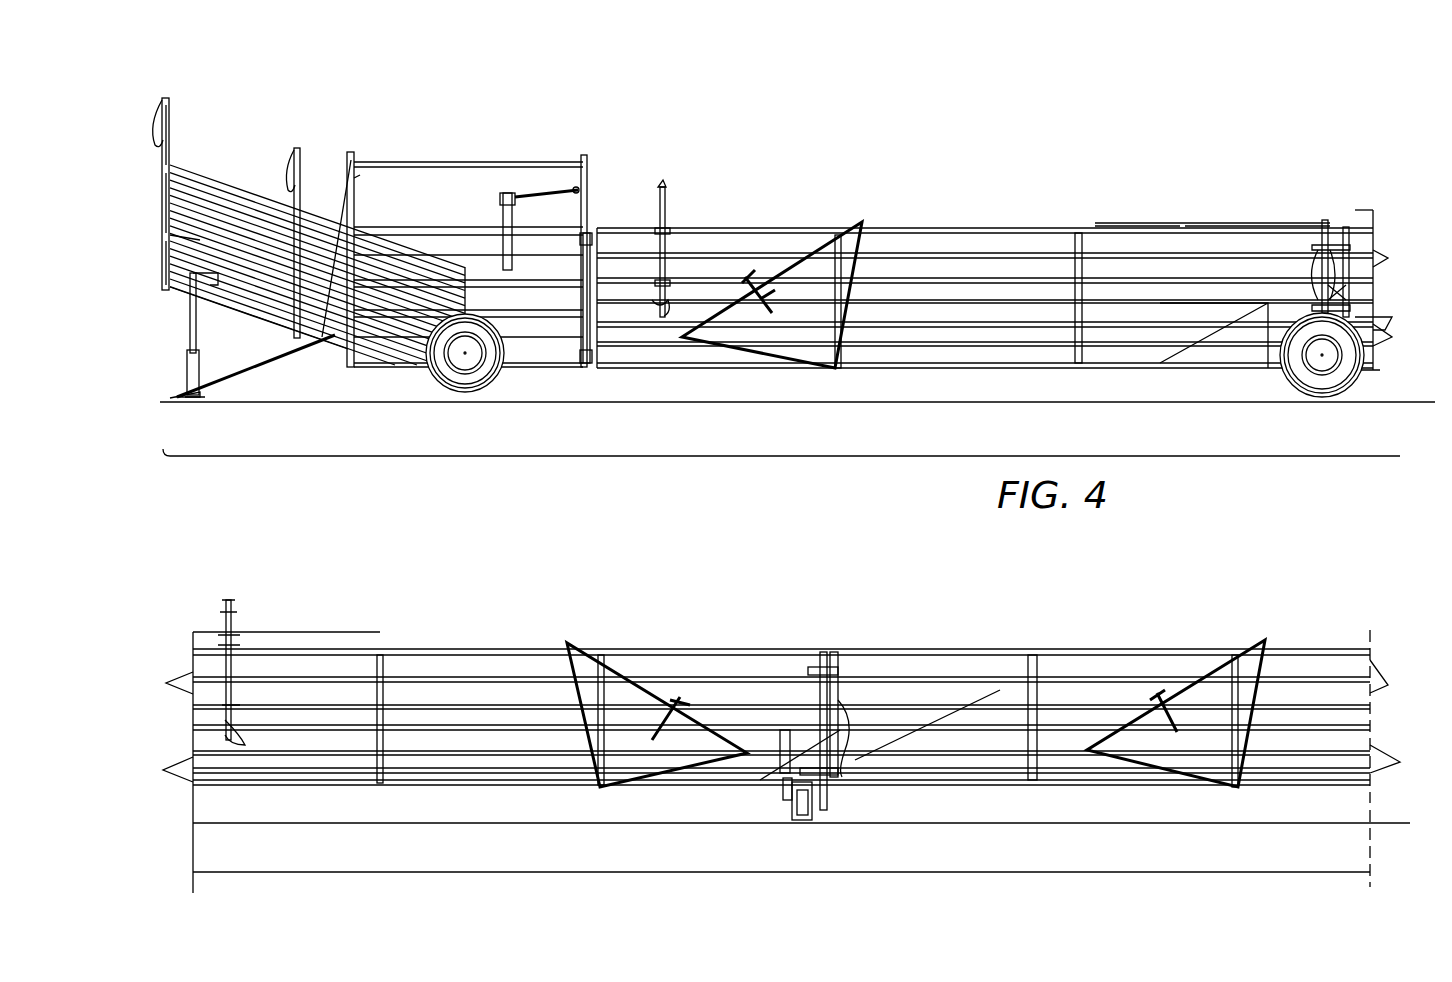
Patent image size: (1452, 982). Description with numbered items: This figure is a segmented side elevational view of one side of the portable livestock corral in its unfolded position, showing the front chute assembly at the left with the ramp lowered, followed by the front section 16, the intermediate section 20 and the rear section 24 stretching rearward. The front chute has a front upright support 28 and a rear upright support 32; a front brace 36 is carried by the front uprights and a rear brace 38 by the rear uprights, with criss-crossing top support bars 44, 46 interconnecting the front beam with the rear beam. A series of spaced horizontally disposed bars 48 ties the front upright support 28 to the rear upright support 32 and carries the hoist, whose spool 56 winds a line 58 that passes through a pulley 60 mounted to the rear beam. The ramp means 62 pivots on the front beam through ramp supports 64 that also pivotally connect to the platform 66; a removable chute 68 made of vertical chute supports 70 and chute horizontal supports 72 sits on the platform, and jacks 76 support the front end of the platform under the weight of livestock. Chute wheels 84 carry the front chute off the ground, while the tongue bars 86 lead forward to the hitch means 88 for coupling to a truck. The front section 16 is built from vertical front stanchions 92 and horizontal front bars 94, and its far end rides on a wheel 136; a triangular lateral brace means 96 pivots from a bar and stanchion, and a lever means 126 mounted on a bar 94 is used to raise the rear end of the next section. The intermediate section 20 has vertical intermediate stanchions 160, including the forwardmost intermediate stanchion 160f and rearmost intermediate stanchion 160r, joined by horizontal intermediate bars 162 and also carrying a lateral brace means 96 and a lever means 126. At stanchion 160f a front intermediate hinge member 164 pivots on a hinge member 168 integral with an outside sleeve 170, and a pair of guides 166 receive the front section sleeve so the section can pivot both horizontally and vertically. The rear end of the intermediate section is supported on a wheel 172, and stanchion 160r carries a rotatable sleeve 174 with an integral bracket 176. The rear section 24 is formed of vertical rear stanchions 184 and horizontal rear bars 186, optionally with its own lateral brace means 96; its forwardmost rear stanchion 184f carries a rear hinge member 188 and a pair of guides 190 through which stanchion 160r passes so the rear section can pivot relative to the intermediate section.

The front section 16 is at (992, 222).
The intermediate section 20 is at (740, 640).
The rear section 24 is at (1040, 640).
The front upright support 28 is at (354, 198).
The rear upright support 32 is at (590, 220).
The front brace 36 is at (352, 160).
The rear brace 38 is at (593, 168).
The top support bar 44 is at (538, 165).
The top support bar 46 is at (470, 162).
The horizontally disposed bars 48 is at (450, 232).
The spool 56 is at (507, 193).
The line 58 is at (568, 200).
The pulley 60 is at (568, 188).
The ramp means 62 is at (268, 165).
The ramp supports 64 is at (328, 235).
The platform 66 is at (258, 320).
The chute 68 is at (175, 233).
The vertical chute supports 70 is at (165, 98).
The chute horizontal supports 72 is at (187, 170).
The jacks 76 is at (188, 322).
The chute wheels 84 is at (445, 385).
The tongue bars 86 is at (278, 380).
The hitch means 88 is at (177, 397).
The vertical front stanchions 92 is at (1328, 222).
The horizontal front bars 94 is at (752, 222).
The lateral brace means 96 is at (810, 240).
The lever means 126 is at (670, 205).
The wheel 136 is at (1345, 380).
The vertical intermediate stanchions 160 is at (385, 680).
The forwardmost intermediate stanchion 160f is at (1352, 240).
The rearmost intermediate stanchion 160r is at (838, 660).
The horizontal intermediate bars 162 is at (505, 655).
The front intermediate hinge member 164 is at (1350, 292).
The guides 166 is at (1348, 225).
The hinge member 168 is at (1320, 215).
The outside sleeve 170 is at (1318, 270).
The wheel 172 is at (790, 822).
The sleeve 174 is at (745, 755).
The bracket 176 is at (830, 740).
The vertical rear stanchions 184 is at (1038, 678).
The forwardmost rear stanchion 184f is at (800, 763).
The horizontal rear bars 186 is at (955, 667).
The rear hinge member 188 is at (845, 778).
The guides 190 is at (832, 650).